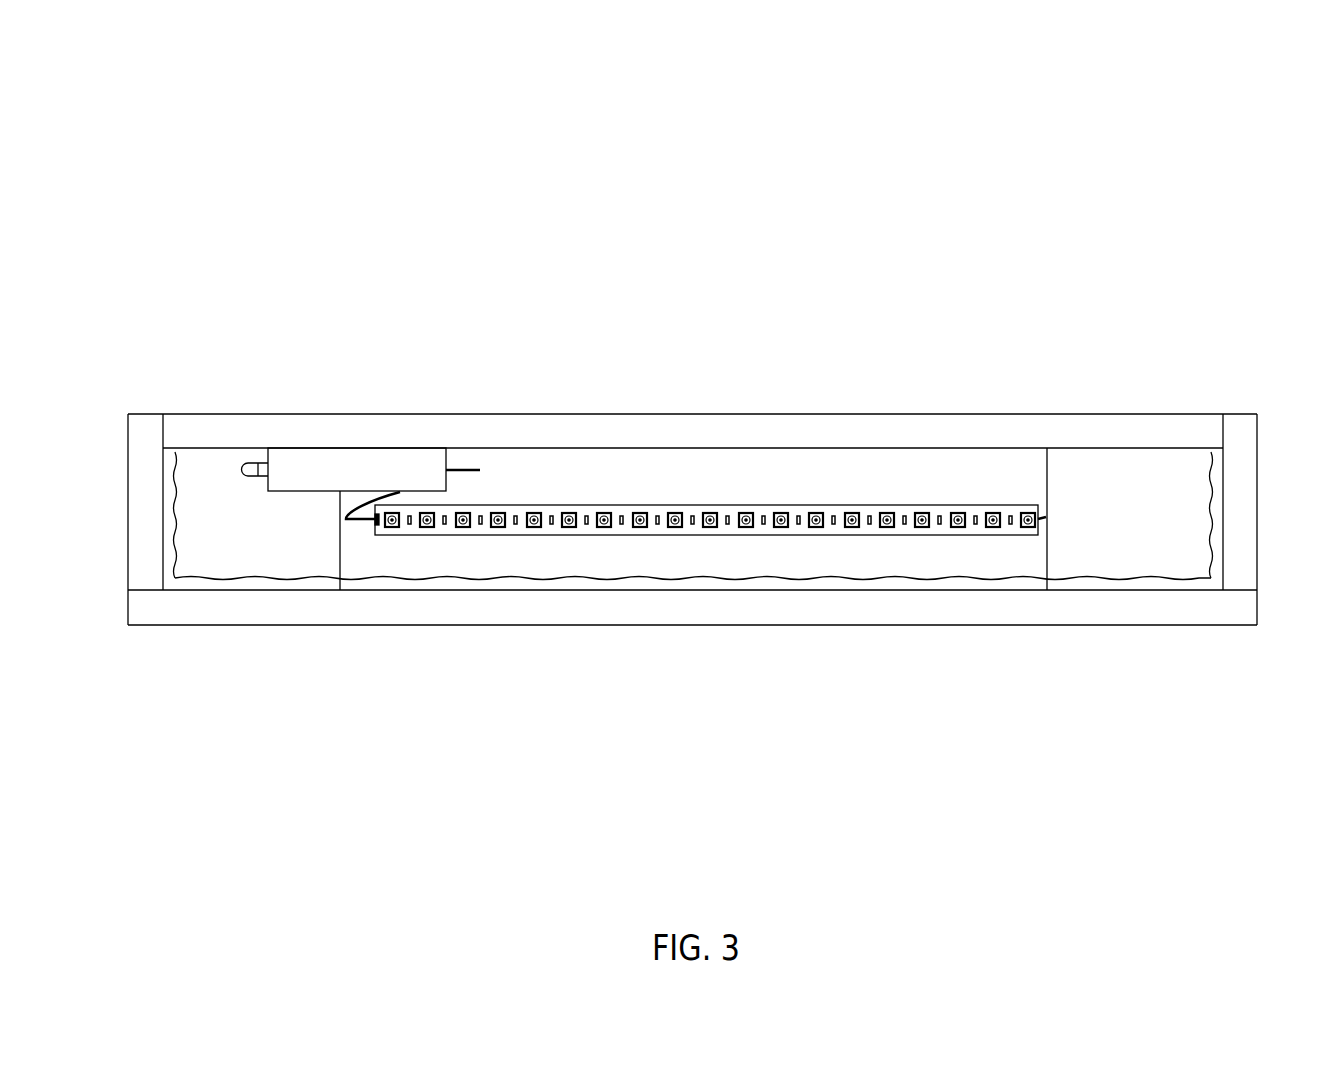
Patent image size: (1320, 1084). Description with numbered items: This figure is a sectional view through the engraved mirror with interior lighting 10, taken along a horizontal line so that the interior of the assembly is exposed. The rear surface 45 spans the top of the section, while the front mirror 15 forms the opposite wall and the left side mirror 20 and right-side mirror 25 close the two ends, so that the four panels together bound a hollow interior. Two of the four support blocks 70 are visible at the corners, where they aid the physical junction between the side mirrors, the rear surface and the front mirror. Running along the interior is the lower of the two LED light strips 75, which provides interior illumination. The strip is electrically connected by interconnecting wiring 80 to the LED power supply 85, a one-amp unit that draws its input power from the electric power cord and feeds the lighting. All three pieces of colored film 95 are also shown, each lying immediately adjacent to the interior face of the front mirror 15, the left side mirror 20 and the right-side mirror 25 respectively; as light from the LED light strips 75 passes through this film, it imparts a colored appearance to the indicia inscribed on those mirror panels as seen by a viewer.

The engraved mirror with interior lighting 10 is at (347, 207).
The front mirror 15 is at (832, 613).
The left side mirror 20 is at (145, 540).
The right-side mirror 25 is at (1235, 517).
The rear surface 45 is at (848, 432).
The support block 70 is at (224, 502).
The LED light strip 75 is at (689, 518).
The interconnecting wiring 80 is at (481, 468).
The LED power supply 85 is at (358, 462).
The colored film 95 is at (173, 501).